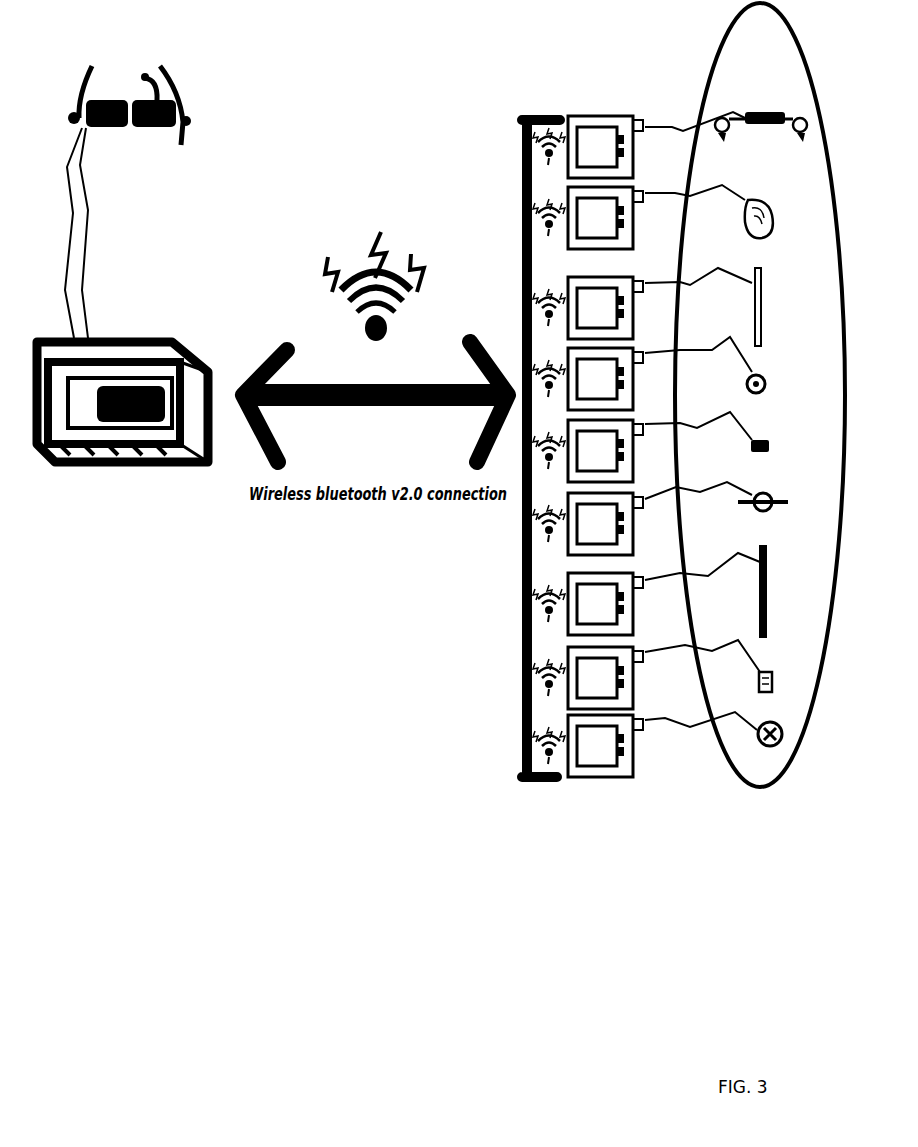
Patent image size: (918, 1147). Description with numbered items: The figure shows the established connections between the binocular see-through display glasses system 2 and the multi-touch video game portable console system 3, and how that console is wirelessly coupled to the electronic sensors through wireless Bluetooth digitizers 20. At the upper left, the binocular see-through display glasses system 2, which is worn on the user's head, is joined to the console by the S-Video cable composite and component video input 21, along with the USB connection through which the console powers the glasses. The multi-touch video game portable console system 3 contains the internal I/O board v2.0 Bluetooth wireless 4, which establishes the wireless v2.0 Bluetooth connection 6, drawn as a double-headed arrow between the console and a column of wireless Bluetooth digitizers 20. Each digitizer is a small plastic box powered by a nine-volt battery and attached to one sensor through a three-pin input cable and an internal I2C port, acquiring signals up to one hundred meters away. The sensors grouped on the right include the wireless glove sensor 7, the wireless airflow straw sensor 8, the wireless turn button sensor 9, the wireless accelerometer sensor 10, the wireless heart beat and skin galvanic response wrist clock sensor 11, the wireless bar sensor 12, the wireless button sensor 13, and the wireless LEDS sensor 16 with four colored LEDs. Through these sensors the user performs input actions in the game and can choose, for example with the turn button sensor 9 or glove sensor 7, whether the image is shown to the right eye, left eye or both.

The binocular see-through display glasses system 2 is at (126, 105).
The multi-touch video game portable console system 3 is at (108, 402).
The internal I/O board v2.0 Bluetooth wireless 4 is at (120, 403).
The wireless v2.0 Bluetooth connection 6 is at (374, 303).
The wireless glove sensor 7 is at (709, 211).
The wireless airflow straw sensor 8 is at (703, 307).
The wireless turn button sensor 9 is at (705, 366).
The wireless accelerometer sensor 10 is at (707, 435).
The wireless heart beat and skin galvanic response wrist clock sensor 11 is at (716, 496).
The wireless bar sensor 12 is at (706, 591).
The wireless button sensor 13 is at (708, 666).
The wireless LEDS sensor 16 is at (713, 729).
The wireless Bluetooth digitizers 20 is at (595, 463).
The S-Video cable composite and component video input 21 is at (132, 233).